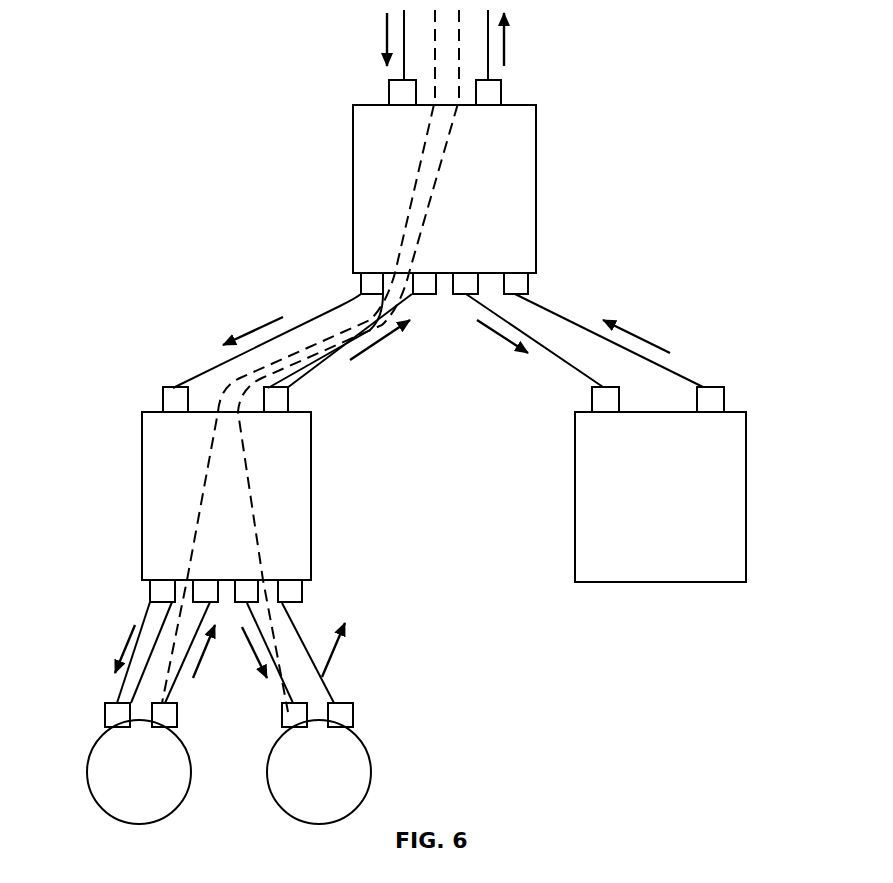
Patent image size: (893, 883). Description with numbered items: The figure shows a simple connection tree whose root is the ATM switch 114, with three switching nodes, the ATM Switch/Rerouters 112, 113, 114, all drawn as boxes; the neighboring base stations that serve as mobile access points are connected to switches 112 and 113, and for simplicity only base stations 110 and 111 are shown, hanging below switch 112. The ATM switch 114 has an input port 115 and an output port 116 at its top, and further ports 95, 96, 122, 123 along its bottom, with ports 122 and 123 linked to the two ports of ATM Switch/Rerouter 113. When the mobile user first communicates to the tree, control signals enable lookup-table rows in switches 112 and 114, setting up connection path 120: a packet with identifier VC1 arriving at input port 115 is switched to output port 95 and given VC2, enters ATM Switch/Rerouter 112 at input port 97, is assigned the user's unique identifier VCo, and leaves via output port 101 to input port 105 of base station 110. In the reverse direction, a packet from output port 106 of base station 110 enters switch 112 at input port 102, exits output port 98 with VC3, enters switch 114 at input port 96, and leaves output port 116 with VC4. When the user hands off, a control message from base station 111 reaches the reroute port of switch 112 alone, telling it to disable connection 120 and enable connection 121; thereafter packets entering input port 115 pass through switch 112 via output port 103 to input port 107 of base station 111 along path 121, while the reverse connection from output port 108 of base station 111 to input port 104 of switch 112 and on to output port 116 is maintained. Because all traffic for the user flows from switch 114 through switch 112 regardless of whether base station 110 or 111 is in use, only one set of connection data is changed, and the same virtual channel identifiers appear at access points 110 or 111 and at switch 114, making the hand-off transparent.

The output port 95 is at (370, 286).
The input port 96 is at (436, 295).
The input port 97 is at (170, 400).
The output port 98 is at (278, 399).
The output port 101 is at (155, 593).
The input port 102 is at (215, 594).
The output port 103 is at (245, 581).
The input port 104 is at (293, 593).
The input port 105 is at (110, 717).
The output port 106 is at (167, 717).
The input port 107 is at (290, 718).
The output port 108 is at (345, 717).
The base station 110 is at (102, 783).
The base station 111 is at (362, 777).
The ATM Switch/Rerouter 112 is at (148, 523).
The ATM Switch/Rerouter 113 is at (737, 500).
The ATM switch 114 is at (523, 193).
The input port 115 is at (397, 90).
The output port 116 is at (495, 91).
The connection path 120 is at (203, 483).
The connection 121 is at (257, 512).
The outlet port 122 is at (462, 294).
The inlet port 123 is at (520, 286).